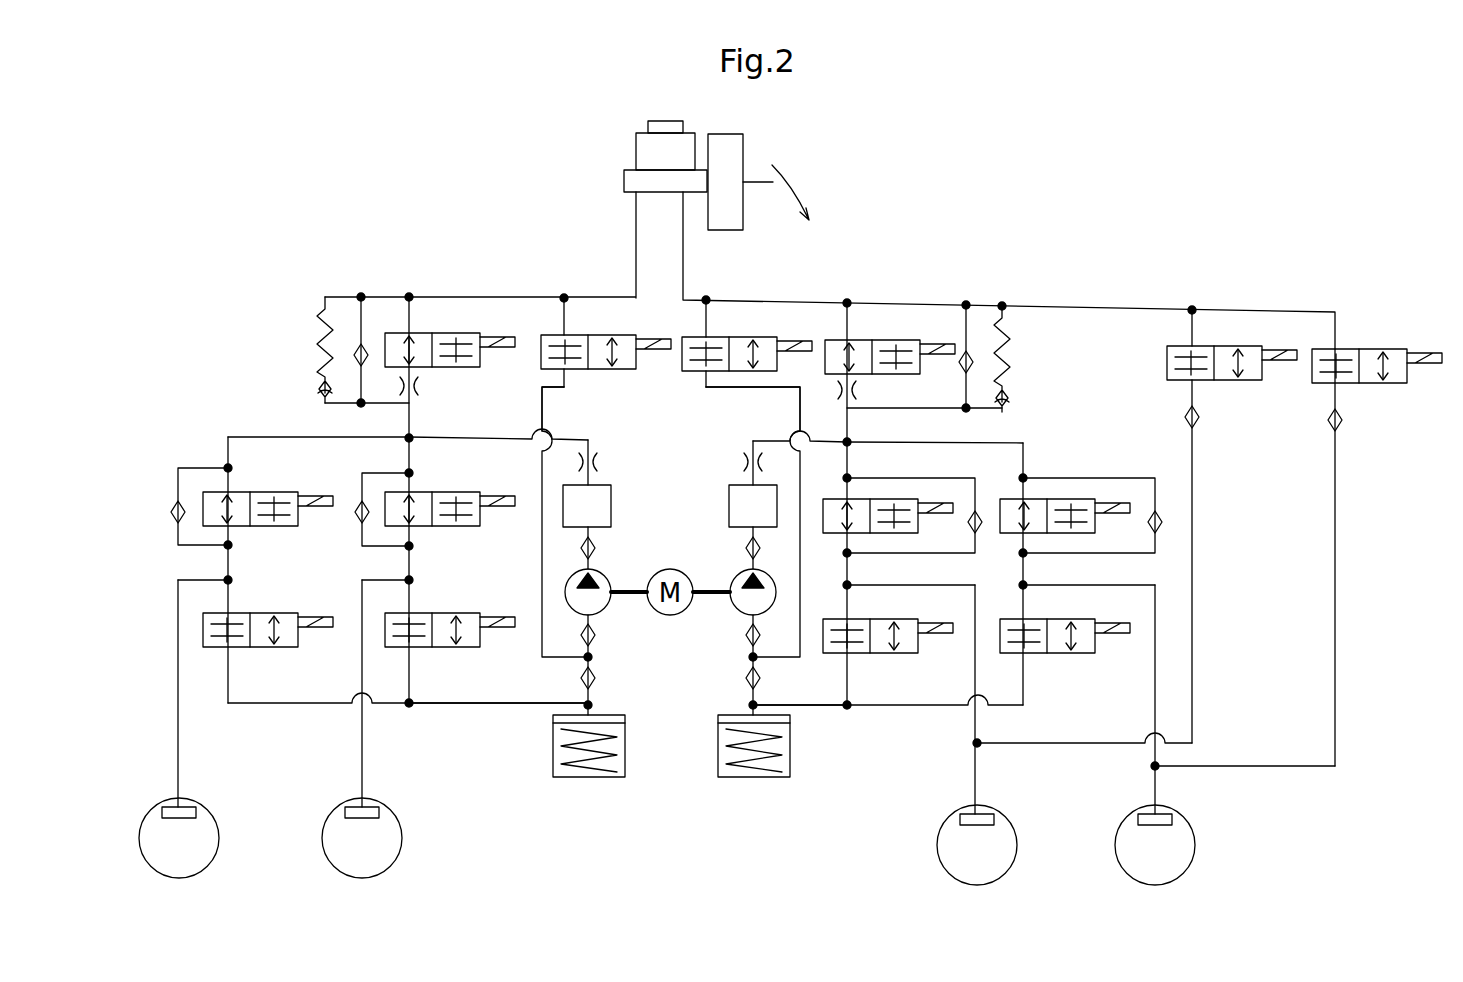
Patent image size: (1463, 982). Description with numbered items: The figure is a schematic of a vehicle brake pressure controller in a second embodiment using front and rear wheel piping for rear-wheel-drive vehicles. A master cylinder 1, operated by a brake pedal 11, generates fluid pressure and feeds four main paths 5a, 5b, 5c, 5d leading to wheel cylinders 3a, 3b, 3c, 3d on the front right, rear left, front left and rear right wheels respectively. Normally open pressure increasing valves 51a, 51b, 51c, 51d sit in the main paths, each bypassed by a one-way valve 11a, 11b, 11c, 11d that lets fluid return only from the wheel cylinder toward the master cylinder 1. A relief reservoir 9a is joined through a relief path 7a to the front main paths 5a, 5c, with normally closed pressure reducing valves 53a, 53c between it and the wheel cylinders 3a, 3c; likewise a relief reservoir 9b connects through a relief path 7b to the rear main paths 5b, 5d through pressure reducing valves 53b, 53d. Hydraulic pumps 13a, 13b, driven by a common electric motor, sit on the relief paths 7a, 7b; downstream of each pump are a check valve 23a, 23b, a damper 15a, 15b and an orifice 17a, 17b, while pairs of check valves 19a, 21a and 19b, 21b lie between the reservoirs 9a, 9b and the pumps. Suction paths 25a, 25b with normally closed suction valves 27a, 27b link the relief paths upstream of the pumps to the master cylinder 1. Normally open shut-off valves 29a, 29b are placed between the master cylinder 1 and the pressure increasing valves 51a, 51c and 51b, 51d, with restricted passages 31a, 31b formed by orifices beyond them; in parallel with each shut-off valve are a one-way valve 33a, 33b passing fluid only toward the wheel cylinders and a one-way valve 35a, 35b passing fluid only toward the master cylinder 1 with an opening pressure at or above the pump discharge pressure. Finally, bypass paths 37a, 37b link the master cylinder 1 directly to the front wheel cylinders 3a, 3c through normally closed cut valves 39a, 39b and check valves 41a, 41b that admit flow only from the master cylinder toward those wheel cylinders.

The master cylinder 1 is at (630, 176).
The brake pedal 11 is at (792, 200).
The wheel cylinder 3a is at (1176, 830).
The wheel cylinder 3b is at (383, 818).
The wheel cylinder 3c is at (998, 824).
The wheel cylinder 3d is at (198, 815).
The main path 5a is at (1028, 478).
The main path 5b is at (405, 455).
The main path 5c is at (913, 491).
The main path 5d is at (228, 452).
The pressure increasing valve 51a is at (1112, 502).
The pressure increasing valve 51b is at (447, 479).
The pressure increasing valve 51c is at (852, 462).
The pressure increasing valve 51d is at (268, 477).
The pressure reducing valve 53a is at (1070, 664).
The pressure reducing valve 53b is at (462, 652).
The pressure reducing valve 53c is at (899, 668).
The pressure reducing valve 53d is at (284, 660).
The relief path 7a is at (800, 708).
The relief path 7b is at (432, 706).
The relief reservoir 9a is at (726, 772).
The relief reservoir 9b is at (562, 772).
The one-way valve 11a is at (1163, 530).
The one-way valve 11b is at (354, 516).
The one-way valve 11c is at (975, 538).
The one-way valve 11d is at (168, 500).
The hydraulic pump 13a is at (742, 568).
The hydraulic pump 13b is at (597, 578).
The damper 15a is at (729, 497).
The damper 15b is at (563, 514).
The orifice 17a is at (731, 466).
The orifice 17b is at (564, 467).
The check valve 19a is at (745, 684).
The check valve 19b is at (580, 684).
The check valve 21a is at (744, 640).
The check valve 21b is at (597, 645).
The check valve 23a is at (779, 602).
The check valve 23b is at (562, 582).
The suction path 25a is at (700, 383).
The suction path 25b is at (548, 386).
The suction valve 27a is at (750, 327).
The suction valve 27b is at (599, 322).
The shut-off valve 29a is at (888, 331).
The shut-off valve 29b is at (444, 322).
The restricted passage 31a is at (845, 374).
The restricted passage 31b is at (397, 370).
The one-way valve 33a is at (976, 345).
The one-way valve 33b is at (307, 360).
The one-way valve 35a is at (1021, 376).
The one-way valve 35b is at (351, 334).
The bypass path 37a is at (1337, 560).
The bypass path 37b is at (1194, 622).
The cut valve 39a is at (1369, 337).
The cut valve 39b is at (1223, 335).
The check valve 41a is at (1342, 440).
The check valve 41b is at (1208, 430).